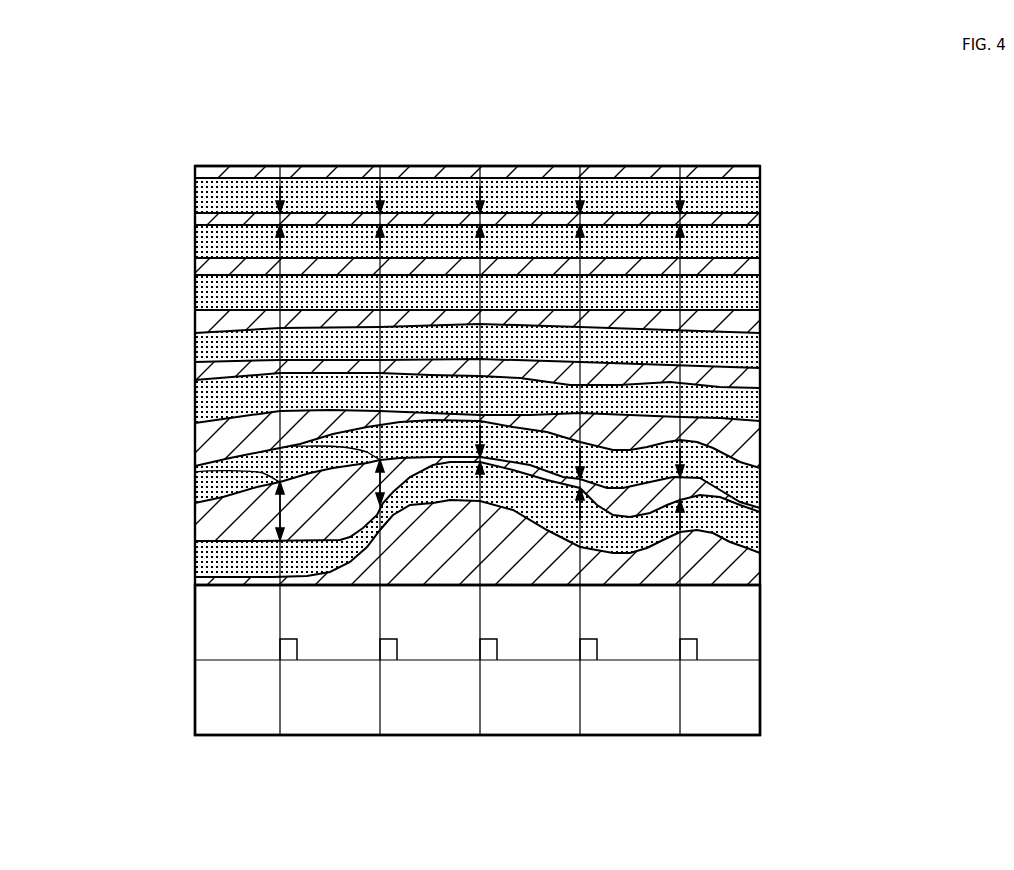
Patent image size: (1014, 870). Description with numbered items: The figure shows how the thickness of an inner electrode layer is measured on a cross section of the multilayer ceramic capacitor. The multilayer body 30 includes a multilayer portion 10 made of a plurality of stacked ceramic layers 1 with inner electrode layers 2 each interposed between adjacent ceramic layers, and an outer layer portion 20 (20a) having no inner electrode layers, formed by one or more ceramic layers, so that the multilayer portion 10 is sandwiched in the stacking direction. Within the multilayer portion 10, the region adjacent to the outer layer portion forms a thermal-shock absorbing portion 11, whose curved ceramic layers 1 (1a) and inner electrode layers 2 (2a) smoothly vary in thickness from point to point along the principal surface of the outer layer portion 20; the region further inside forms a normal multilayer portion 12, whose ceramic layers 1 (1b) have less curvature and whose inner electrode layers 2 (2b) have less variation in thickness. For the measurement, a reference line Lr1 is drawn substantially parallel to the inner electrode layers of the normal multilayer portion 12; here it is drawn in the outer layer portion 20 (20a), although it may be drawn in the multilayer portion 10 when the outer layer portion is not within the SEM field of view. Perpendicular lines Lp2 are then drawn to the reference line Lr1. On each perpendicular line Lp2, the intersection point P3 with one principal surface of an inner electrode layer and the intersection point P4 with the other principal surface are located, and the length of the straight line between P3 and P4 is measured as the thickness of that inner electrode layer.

The ceramic layer 1 is at (403, 374).
The curved ceramic layer 1a is at (195, 560).
The ceramic layer of normal multilayer portion 1b is at (195, 185).
The inner electrode layer 2 is at (401, 375).
The inner electrode layer of thermal-shock absorbing portion 2a is at (195, 522).
The inner electrode layer of normal multilayer portion 2b is at (195, 216).
The multilayer portion 10 is at (846, 585).
The thermal-shock absorbing portion 11 is at (784, 585).
The normal multilayer portion 12 is at (784, 167).
The outer layer portion 20 is at (486, 709).
The outer layer portion 20a is at (727, 737).
The multilayer body 30 is at (790, 74).
The intersection point P3 is at (155, 640).
The intersection point P4 is at (282, 216).
The reference line Lr1 is at (325, 661).
The perpendicular line Lp2 is at (678, 617).